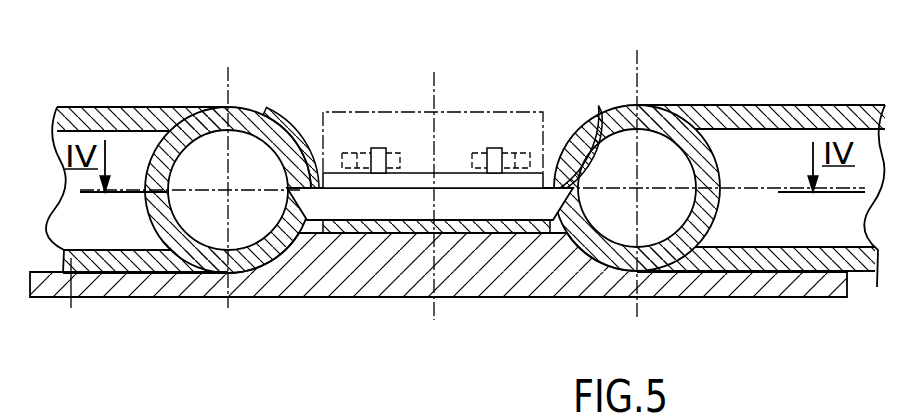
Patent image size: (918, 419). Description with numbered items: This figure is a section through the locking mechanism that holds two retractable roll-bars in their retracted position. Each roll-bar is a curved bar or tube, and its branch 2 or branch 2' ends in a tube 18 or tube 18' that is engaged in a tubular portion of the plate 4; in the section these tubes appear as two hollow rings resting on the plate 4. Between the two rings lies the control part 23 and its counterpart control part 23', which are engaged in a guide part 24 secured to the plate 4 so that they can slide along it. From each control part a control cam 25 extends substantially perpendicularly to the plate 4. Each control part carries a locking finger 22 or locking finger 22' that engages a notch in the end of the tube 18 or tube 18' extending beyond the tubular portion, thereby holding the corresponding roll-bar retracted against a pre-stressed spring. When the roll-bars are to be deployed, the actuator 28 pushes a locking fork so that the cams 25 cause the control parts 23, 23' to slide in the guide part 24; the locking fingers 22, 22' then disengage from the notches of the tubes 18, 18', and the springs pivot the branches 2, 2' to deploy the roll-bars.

The branch 2 is at (137, 136).
The branch 2' is at (761, 155).
The plate 4 is at (538, 267).
The tube 18 is at (239, 140).
The tube 18' is at (609, 146).
The locking finger 22 is at (282, 100).
The locking finger 22' is at (584, 233).
The control part 23 is at (430, 265).
The control part 23' is at (432, 306).
The guide part 24 is at (450, 223).
The control cam 25 is at (377, 163).
The actuator 28 is at (93, 338).